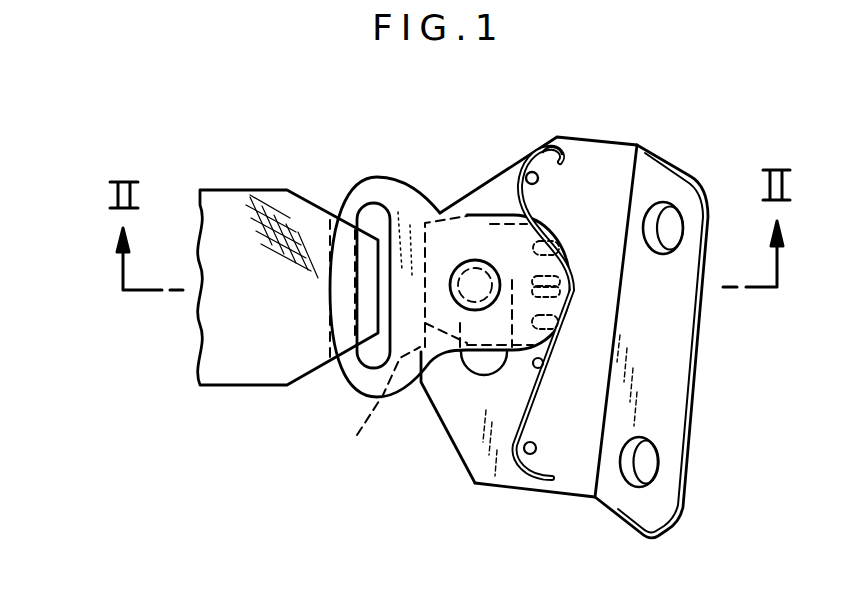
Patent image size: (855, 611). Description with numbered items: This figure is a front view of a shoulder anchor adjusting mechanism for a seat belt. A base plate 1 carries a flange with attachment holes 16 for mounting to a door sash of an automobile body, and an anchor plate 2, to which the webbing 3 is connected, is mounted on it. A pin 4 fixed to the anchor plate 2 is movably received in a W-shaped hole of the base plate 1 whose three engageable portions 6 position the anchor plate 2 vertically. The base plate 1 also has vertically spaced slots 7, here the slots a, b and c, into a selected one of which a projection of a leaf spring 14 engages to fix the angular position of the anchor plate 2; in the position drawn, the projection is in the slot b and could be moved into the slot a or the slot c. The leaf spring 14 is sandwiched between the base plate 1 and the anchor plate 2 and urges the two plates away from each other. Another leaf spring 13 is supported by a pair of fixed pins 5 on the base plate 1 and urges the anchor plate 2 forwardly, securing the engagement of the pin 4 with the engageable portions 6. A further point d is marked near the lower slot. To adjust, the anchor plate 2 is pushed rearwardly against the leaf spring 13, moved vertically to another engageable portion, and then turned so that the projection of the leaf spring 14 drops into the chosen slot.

The base plate 1 is at (613, 168).
The anchor plate 2 is at (370, 193).
The webbing 3 is at (231, 218).
The pin 4 is at (472, 262).
The fixed pins 5 is at (539, 180).
The engageable portions 6 is at (456, 371).
The slots 7 is at (548, 370).
The leaf spring 13 is at (551, 153).
The leaf spring 14 is at (425, 340).
The attachment holes 16 is at (645, 460).
The slot a is at (563, 244).
The slot b is at (563, 283).
The slot c is at (563, 323).
The eyelet d is at (547, 363).